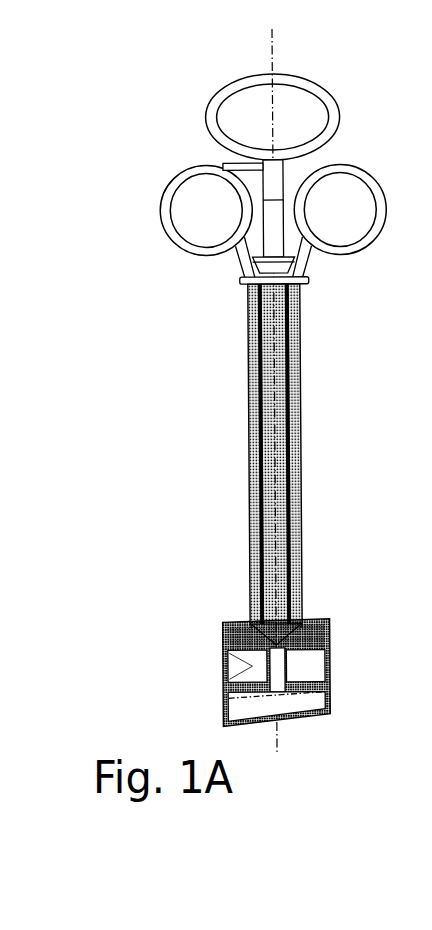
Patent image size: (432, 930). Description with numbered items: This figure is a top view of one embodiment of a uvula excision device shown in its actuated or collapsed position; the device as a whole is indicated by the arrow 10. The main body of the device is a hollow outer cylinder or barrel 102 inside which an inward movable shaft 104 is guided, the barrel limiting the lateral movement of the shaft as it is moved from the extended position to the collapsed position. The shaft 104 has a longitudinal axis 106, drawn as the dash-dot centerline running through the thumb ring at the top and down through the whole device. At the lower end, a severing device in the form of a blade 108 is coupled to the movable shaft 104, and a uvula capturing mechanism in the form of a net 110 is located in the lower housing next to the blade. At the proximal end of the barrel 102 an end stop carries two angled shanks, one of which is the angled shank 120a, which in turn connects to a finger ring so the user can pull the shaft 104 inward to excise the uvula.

The syringe device 10 is at (358, 738).
The hollow outer cylinder or barrel 102 is at (250, 462).
The inward movable shaft 104 is at (277, 552).
The longitudinal axis 106 is at (271, 107).
The blade 108 is at (243, 708).
The net 110 is at (300, 667).
The angled shank 120a is at (237, 265).